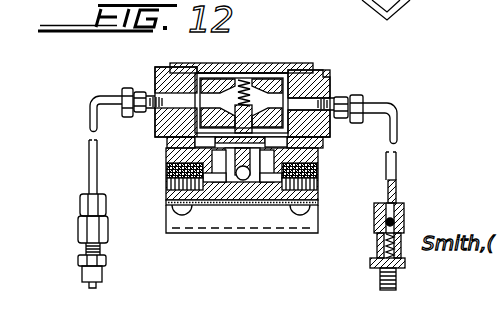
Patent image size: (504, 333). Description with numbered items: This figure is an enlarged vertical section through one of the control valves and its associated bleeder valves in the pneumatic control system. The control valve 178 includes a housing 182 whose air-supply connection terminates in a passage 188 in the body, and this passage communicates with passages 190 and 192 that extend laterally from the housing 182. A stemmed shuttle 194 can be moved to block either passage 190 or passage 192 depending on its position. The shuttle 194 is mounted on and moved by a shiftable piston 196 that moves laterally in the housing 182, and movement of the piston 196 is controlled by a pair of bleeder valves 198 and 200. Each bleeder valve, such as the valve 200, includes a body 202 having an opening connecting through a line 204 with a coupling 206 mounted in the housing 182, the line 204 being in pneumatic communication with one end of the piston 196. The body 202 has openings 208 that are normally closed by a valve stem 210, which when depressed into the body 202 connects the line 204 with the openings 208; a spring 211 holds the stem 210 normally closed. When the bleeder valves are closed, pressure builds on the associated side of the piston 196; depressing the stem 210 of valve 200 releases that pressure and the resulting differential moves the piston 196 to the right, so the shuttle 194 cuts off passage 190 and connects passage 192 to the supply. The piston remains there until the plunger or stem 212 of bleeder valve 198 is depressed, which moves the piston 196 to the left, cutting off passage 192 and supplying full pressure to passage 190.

The control valve 178 is at (333, 64).
The housing 182 is at (214, 65).
The passage 188 is at (246, 181).
The passage 190 is at (170, 177).
The passage 192 is at (316, 173).
The stemmed shuttle 194 is at (322, 141).
The shiftable piston 196 is at (272, 73).
The bleeder valve 198 is at (78, 232).
The bleeder valve 200 is at (405, 220).
The body 202 is at (376, 244).
The line 204 is at (398, 166).
The coupling 206 is at (331, 97).
The openings 208 is at (378, 275).
The valve stem 210 is at (396, 289).
The spring 211 is at (380, 236).
The plunger or stem 212 is at (100, 287).